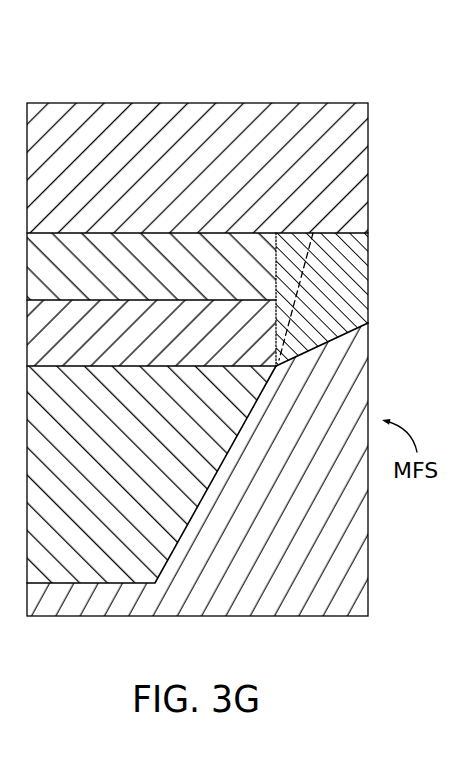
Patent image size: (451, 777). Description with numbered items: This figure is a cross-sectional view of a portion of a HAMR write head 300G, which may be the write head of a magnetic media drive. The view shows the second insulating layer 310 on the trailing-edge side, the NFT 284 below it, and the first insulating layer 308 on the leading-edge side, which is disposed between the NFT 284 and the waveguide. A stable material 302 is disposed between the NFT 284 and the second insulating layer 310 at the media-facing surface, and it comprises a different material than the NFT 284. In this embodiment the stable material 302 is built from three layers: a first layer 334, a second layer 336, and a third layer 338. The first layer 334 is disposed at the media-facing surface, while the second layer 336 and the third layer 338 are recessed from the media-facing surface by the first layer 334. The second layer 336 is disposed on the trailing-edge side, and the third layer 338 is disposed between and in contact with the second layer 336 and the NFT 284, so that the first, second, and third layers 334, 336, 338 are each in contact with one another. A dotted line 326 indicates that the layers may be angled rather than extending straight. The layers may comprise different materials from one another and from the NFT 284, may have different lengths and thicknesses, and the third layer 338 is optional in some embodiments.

The HAMR write head 300G is at (178, 75).
The stable material 302 is at (115, 203).
The second insulating layer 310 is at (260, 152).
The dotted line 326 is at (303, 262).
The first layer 334 is at (348, 302).
The second layer 336 is at (167, 275).
The third layer 338 is at (167, 343).
The NFT 284 is at (123, 470).
The first insulating layer 308 is at (310, 577).